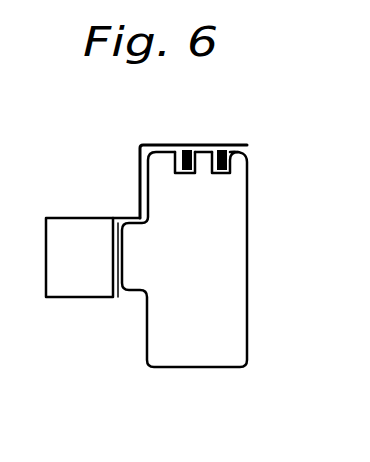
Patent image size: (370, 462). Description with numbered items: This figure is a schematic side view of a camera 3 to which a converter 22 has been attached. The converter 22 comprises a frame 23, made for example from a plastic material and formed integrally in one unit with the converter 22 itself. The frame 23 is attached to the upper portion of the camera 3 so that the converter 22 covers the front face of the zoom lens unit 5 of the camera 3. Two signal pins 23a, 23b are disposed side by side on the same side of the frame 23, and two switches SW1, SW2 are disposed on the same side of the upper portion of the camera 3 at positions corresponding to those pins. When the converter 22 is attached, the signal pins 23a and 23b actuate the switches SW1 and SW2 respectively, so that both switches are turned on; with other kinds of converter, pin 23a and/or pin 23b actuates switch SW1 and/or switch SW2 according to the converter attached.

The camera 3 is at (184, 368).
The zoom lens unit 5 is at (133, 290).
The converter 22 is at (64, 299).
The frame 23 is at (140, 161).
The signal pin 23a is at (184, 146).
The signal pin 23b is at (222, 146).
The switch SW1 is at (189, 176).
The switch SW2 is at (223, 179).